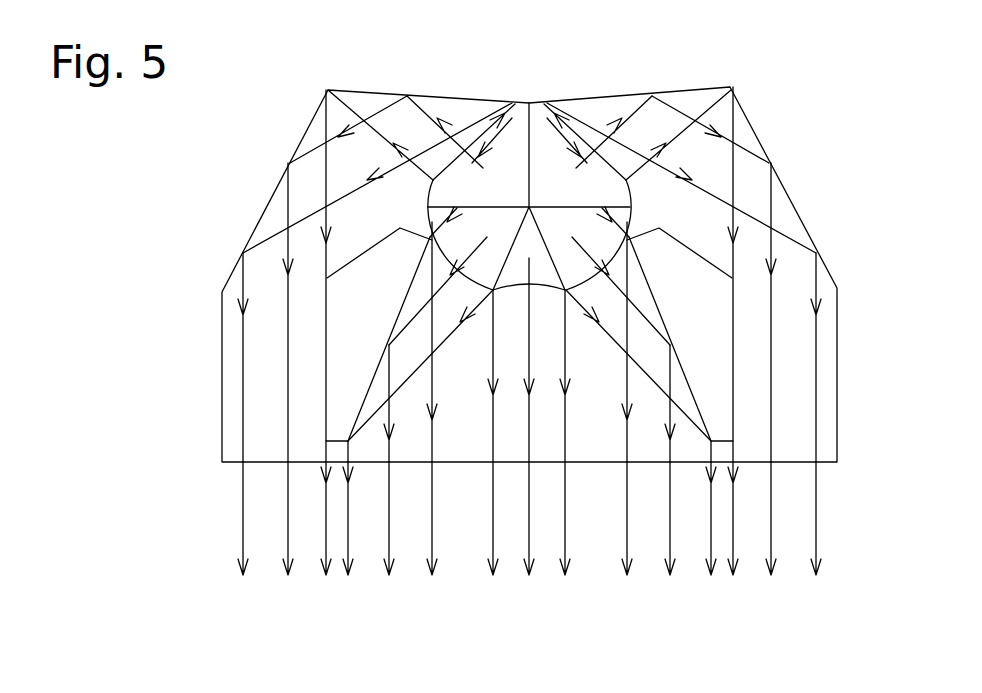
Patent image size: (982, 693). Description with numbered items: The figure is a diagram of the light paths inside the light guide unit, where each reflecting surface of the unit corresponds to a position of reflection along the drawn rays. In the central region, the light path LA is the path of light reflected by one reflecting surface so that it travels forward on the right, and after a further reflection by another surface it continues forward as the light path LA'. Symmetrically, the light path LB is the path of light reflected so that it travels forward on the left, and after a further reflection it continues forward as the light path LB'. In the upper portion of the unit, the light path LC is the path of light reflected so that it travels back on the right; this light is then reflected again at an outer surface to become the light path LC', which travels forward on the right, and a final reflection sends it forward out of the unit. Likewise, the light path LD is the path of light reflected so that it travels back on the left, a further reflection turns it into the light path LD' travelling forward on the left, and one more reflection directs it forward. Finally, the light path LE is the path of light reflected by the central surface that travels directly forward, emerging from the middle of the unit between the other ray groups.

The light path LA is at (645, 334).
The light path LB is at (414, 334).
The light path LC is at (637, 151).
The light path LD is at (421, 151).
The light path LD' is at (358, 277).
The light path LC' is at (698, 277).
The light path LB' is at (392, 559).
The light path LE is at (564, 525).
The light path LA' is at (771, 559).